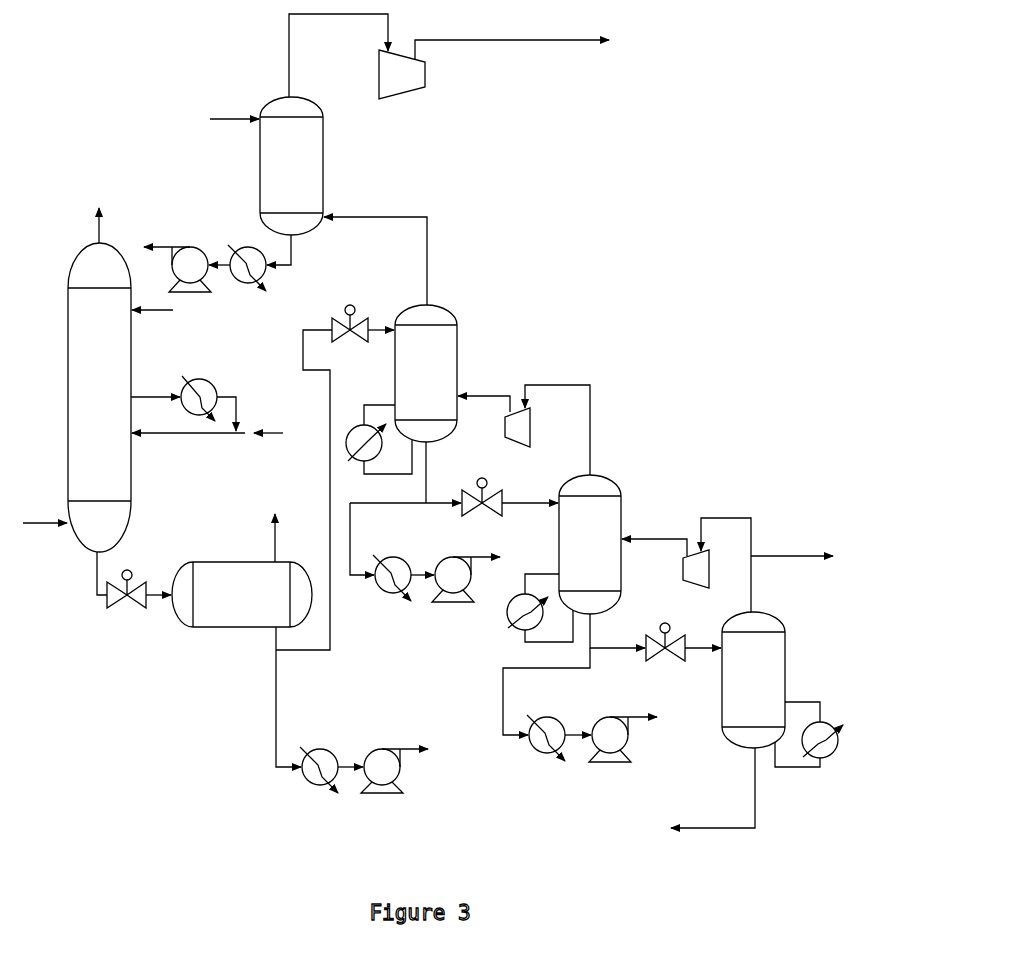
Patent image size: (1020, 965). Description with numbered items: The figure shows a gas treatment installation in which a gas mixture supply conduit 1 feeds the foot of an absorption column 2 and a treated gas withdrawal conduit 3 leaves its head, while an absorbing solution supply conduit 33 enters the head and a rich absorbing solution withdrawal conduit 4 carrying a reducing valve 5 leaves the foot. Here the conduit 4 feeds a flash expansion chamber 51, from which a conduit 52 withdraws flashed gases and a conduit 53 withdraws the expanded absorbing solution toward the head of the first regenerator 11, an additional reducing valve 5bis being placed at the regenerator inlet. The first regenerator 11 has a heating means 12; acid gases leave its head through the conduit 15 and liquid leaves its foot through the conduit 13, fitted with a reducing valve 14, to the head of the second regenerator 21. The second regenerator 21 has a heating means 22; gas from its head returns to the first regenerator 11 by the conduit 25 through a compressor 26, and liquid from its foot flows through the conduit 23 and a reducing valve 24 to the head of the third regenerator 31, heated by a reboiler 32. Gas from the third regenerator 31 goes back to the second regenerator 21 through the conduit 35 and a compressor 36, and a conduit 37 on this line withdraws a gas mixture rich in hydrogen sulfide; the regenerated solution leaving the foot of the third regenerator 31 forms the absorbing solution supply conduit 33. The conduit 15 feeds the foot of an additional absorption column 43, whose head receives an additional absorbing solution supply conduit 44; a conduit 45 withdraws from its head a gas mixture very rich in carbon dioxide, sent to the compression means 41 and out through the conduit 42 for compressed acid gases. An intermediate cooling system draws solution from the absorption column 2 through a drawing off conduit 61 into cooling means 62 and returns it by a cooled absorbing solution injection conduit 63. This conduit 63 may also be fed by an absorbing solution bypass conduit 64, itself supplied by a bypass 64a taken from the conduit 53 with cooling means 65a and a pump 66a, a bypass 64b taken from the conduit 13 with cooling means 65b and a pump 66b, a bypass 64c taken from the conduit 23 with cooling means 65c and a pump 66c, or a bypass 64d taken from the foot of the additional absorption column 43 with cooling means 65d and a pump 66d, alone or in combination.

The gas mixture supply conduit 1 is at (45, 510).
The absorption column 2 is at (99, 397).
The treated gas withdrawal conduit 3 is at (99, 209).
The rich absorbing solution withdrawal conduit 4 is at (92, 581).
The reducing valve 5 is at (139, 598).
The additional reducing valve 5bis is at (363, 333).
The first regenerator 11 is at (401, 389).
The heating means 12 is at (405, 528).
The liquid conveying conduit 13 is at (440, 472).
The reducing valve 14 is at (510, 493).
The acid gas withdrawal conduit 15 is at (393, 261).
The second regenerator 21 is at (590, 544).
The heating means 22 is at (536, 613).
The liquid conveying conduit 23 is at (574, 674).
The reducing valve 24 is at (683, 632).
The gas conveying conduit 25 is at (573, 430).
The compressor 26 is at (510, 423).
The third regenerator 31 is at (753, 680).
The heating means 32 is at (820, 734).
The absorbing solution supply conduit 33 is at (443, 570).
The gas conveying conduit 35 is at (726, 551).
The compressor 36 is at (680, 563).
The hydrogen sulfide rich gas withdrawal conduit 37 is at (809, 553).
The downstream compression means 41 is at (403, 82).
The compressed acid gas withdrawal conduit 42 is at (512, 53).
The additional absorption column 43 is at (291, 166).
The additional absorbing solution supply conduit 44 is at (234, 107).
The carbon dioxide rich gas withdrawal conduit 45 is at (338, 55).
The flash expansion chamber 51 is at (242, 594).
The flashed gas withdrawal conduit 52 is at (258, 538).
The expanded absorbing solution withdrawal conduit 53 is at (304, 548).
The absorbing solution drawing off conduit 61 is at (155, 384).
The cooling means 62 is at (208, 397).
The cooled absorbing solution injection conduit 63 is at (188, 445).
The absorbing solution bypass conduit 64 is at (267, 445).
The bypass 64a is at (414, 737).
The bypass 64b is at (487, 545).
The bypass 64c is at (643, 706).
The bypass 64d is at (161, 261).
The cooling means 65a is at (331, 760).
The cooling means 65b is at (403, 567).
The cooling means 65c is at (559, 728).
The cooling means 65d is at (250, 259).
The pump 66a is at (382, 782).
The pump 66b is at (453, 589).
The pump 66c is at (610, 750).
The pump 66d is at (190, 260).